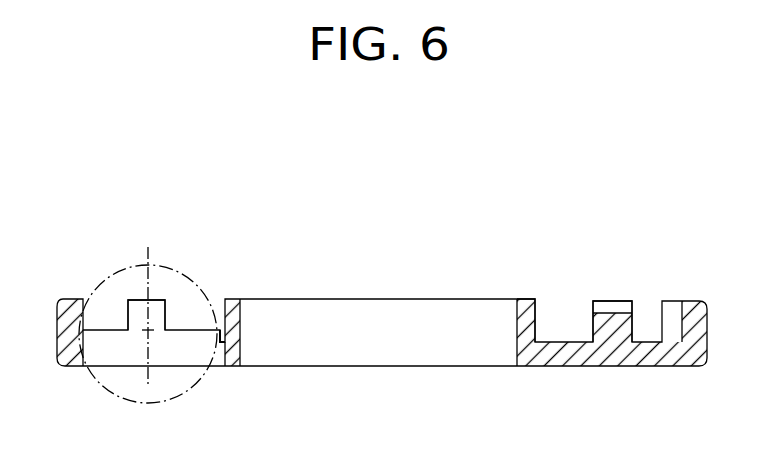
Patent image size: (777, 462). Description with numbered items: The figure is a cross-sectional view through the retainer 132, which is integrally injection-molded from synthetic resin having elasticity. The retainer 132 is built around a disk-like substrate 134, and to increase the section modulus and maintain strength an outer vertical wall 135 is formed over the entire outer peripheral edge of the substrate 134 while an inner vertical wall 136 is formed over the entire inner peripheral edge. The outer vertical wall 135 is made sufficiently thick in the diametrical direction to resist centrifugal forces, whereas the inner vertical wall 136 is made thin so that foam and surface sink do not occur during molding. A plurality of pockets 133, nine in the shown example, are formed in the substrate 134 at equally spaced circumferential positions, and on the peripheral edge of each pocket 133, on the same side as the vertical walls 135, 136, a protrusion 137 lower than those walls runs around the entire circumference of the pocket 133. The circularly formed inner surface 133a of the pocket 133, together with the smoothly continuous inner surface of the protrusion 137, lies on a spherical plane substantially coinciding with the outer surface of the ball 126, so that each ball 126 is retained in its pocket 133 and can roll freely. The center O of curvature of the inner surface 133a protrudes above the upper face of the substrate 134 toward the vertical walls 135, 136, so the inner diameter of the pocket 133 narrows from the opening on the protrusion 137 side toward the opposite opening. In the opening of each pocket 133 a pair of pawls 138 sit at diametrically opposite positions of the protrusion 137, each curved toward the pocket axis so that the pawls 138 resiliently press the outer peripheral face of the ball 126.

The ball 126 is at (172, 267).
The retainer 132 is at (373, 298).
The pocket 133 is at (112, 353).
The inner surface 133a is at (205, 355).
The substrate 134 is at (607, 352).
The outer vertical wall 135 is at (690, 308).
The inner vertical wall 136 is at (527, 308).
The protrusion 137 is at (217, 338).
The pawl 138 is at (135, 310).